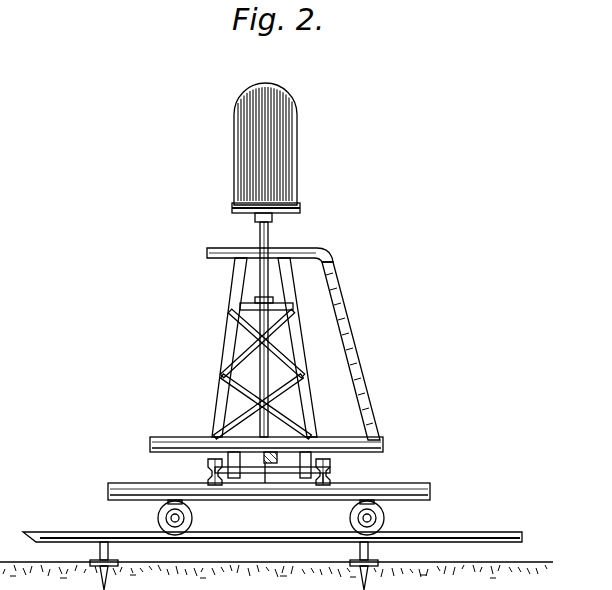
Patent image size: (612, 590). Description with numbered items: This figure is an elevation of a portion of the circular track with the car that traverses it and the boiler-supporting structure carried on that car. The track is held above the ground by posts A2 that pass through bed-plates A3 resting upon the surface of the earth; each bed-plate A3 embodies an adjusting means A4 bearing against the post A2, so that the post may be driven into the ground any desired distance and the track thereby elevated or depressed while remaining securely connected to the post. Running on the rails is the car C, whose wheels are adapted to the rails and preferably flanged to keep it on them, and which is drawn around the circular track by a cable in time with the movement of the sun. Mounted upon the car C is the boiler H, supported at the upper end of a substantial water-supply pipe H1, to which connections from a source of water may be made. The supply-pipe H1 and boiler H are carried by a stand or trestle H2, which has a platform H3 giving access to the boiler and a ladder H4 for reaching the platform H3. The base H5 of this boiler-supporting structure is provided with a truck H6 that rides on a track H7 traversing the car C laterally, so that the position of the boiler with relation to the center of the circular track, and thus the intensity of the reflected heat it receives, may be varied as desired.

The boiler H is at (234, 135).
The water-supply pipe H1 is at (240, 357).
The stand or trestle H2 is at (289, 315).
The platform H3 is at (312, 248).
The ladder H4 is at (364, 378).
The base H5 is at (346, 430).
The truck H6 is at (378, 456).
The track H7 is at (340, 478).
The car C is at (432, 493).
The posts A2 is at (366, 560).
The bed-plates A3 is at (432, 562).
The adjusting means A4 is at (358, 551).